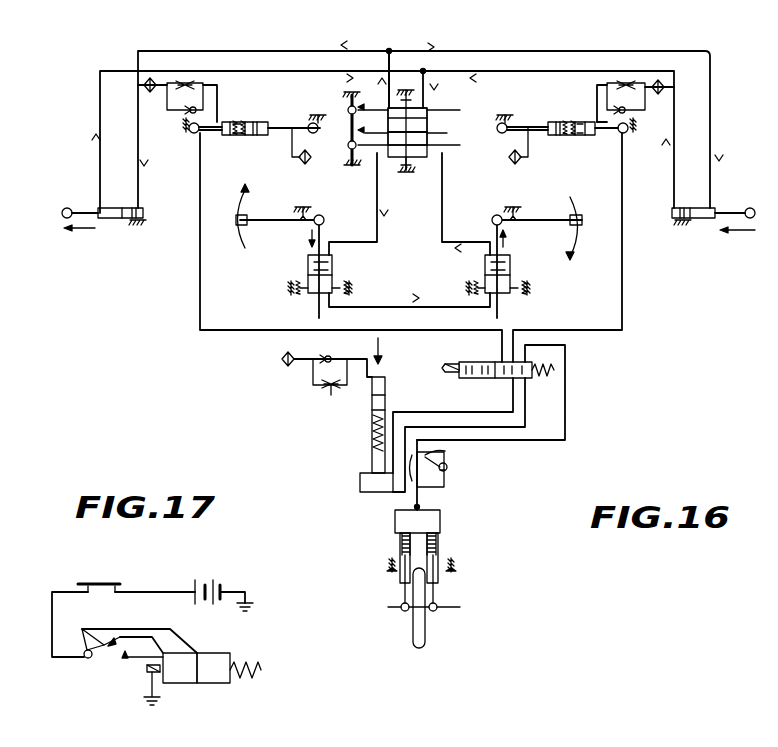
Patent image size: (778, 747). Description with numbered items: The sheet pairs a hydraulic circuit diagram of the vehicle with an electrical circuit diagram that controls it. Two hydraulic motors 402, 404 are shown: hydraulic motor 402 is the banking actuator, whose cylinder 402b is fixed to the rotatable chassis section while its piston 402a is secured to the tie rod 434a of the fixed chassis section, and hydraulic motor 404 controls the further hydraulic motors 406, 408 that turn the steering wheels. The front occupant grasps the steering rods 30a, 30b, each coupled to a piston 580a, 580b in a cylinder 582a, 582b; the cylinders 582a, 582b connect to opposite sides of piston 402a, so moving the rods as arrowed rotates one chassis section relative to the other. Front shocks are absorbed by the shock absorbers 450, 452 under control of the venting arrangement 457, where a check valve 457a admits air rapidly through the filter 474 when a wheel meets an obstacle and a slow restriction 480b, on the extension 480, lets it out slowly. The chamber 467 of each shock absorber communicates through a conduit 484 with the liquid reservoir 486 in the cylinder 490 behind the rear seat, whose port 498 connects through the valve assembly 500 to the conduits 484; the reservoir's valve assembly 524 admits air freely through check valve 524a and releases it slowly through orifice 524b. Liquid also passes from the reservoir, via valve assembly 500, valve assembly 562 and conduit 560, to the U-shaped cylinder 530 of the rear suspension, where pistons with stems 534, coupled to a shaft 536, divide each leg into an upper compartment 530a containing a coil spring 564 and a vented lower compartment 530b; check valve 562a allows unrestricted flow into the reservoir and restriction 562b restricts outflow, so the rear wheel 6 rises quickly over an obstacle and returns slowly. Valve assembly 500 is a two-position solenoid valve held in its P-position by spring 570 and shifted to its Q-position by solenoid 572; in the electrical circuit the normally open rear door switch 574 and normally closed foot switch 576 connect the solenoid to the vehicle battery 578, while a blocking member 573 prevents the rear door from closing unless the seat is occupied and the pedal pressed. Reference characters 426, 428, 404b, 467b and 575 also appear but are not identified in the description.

In FIG. 16, the filter 474 is at (144, 82).
In FIG. 16, the slow restriction 480b is at (185, 82).
In FIG. 16, the extension 480 is at (635, 101).
In FIG. 16, the venting arrangement 457 is at (201, 109).
In FIG. 16, the check valve 457a is at (184, 123).
In FIG. 16, the shock absorber 450 is at (248, 135).
In FIG. 16, the chamber 467 is at (228, 135).
In FIG. 16, the spring 467b is at (582, 135).
In FIG. 16, the hydraulic motor 406 is at (128, 208).
In FIG. 16, the actuator rod 426 is at (96, 212).
In FIG. 16, the tie rod 434a is at (340, 125).
In FIG. 16, the hydraulic motor 402 is at (433, 153).
In FIG. 16, the hydraulic motor 404 is at (430, 108).
In FIG. 16, the piston 402a is at (427, 134).
In FIG. 16, the supply line 404b is at (398, 102).
In FIG. 16, the cylinder 402b is at (410, 160).
In FIG. 16, the steering rod 30a is at (300, 218).
In FIG. 16, the steering rod 30b is at (528, 218).
In FIG. 16, the piston 580a is at (309, 272).
In FIG. 16, the piston 580b is at (498, 273).
In FIG. 16, the cylinder 582a is at (316, 302).
In FIG. 16, the cylinder 582b is at (500, 298).
In FIG. 16, the conduit 484 is at (200, 310).
In FIG. 16, the shock absorber 452 is at (568, 135).
In FIG. 16, the hydraulic motor 408 is at (682, 210).
In FIG. 16, the actuator rod 428 is at (734, 210).
In FIG. 16, the check valve 524a is at (300, 350).
In FIG. 16, the valve assembly 524 is at (286, 360).
In FIG. 16, the orifice 524b is at (331, 388).
In FIG. 16, the cylinder 490 is at (386, 402).
In FIG. 16, the liquid reservoir 486 is at (372, 438).
In FIG. 16, the port 498 is at (388, 486).
In FIG. 16, the valve assembly 500 is at (534, 378).
In FIG. 17, the valve assembly 500 is at (188, 683).
In FIG. 16, the spring 570 is at (554, 370).
In FIG. 17, the spring 570 is at (240, 678).
In FIG. 16, the solenoid 572 is at (446, 372).
In FIG. 17, the solenoid 572 is at (145, 674).
In FIG. 16, the valve assembly 562 is at (449, 466).
In FIG. 16, the check valve 562a is at (446, 473).
In FIG. 16, the restriction 562b is at (444, 452).
In FIG. 16, the conduit 560 is at (420, 507).
In FIG. 16, the U-shaped cylinder 530 is at (438, 518).
In FIG. 16, the coil spring 564 is at (400, 541).
In FIG. 16, the upper compartment 530a is at (471, 549).
In FIG. 16, the lower compartment 530b is at (494, 575).
In FIG. 16, the shaft 536 is at (401, 607).
In FIG. 16, the piston stem 534 is at (438, 602).
In FIG. 16, the rear wheel 6 is at (425, 634).
In FIG. 17, the foot switch 576 is at (80, 582).
In FIG. 17, the vehicle battery 578 is at (204, 580).
In FIG. 17, the rear door switch 575 is at (82, 650).
In FIG. 17, the rear door switch 574 is at (104, 634).
In FIG. 17, the blocking member 573 is at (177, 645).